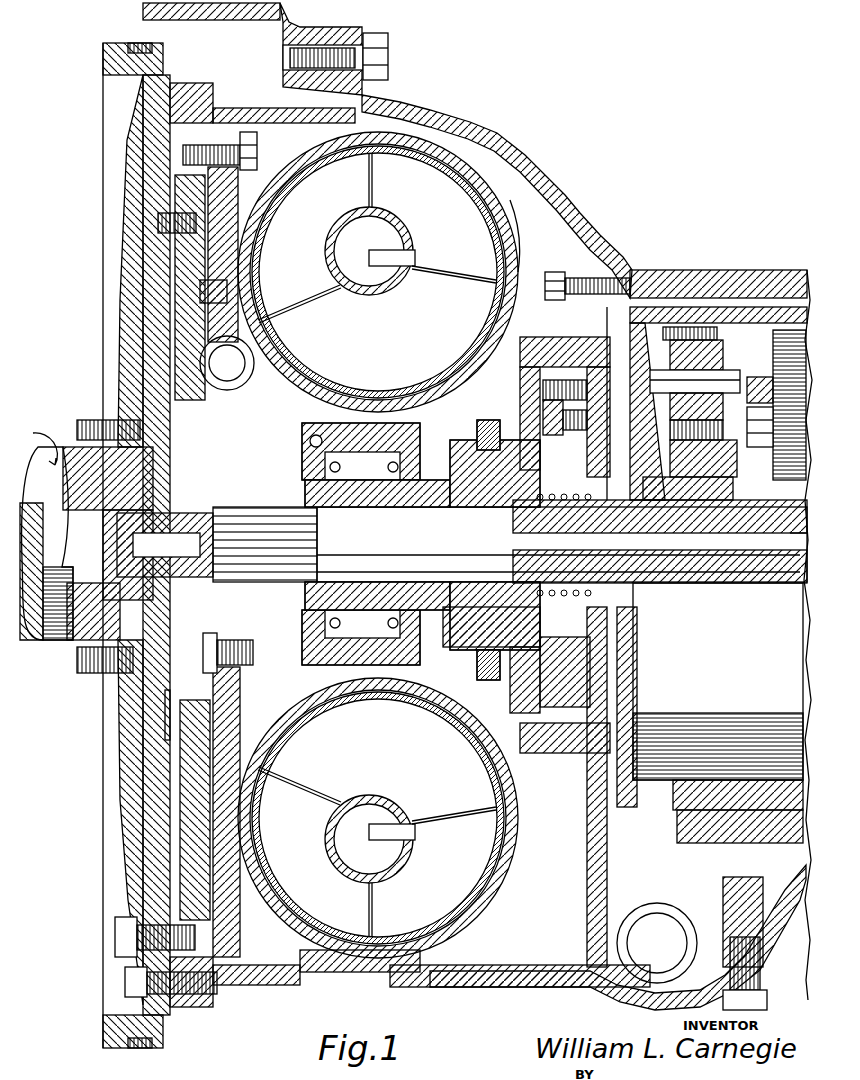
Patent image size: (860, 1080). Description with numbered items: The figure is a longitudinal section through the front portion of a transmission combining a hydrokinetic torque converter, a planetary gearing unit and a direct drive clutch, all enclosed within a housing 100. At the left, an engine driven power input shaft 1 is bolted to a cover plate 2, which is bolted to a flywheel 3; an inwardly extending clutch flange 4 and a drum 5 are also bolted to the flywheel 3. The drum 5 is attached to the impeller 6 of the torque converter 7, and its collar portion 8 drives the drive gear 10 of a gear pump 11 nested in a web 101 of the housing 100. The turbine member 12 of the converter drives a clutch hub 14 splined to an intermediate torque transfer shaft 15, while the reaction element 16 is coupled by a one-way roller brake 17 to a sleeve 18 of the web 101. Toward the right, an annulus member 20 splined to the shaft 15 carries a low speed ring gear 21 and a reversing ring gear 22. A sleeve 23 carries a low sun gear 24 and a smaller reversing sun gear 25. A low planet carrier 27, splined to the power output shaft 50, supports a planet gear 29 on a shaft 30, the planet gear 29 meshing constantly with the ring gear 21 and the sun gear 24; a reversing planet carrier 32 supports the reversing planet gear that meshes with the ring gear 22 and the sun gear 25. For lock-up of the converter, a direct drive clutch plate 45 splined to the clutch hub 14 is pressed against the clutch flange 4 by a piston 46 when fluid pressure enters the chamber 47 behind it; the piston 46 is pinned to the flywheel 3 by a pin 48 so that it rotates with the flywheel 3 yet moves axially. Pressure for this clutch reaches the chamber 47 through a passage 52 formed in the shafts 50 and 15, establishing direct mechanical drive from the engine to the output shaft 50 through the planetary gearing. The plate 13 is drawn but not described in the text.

The power input shaft 1 is at (43, 647).
The cover plate 2 is at (125, 340).
The flywheel 3 is at (150, 103).
The clutch flange 4 is at (228, 178).
The drum 5 is at (250, 108).
The impeller 6 is at (505, 240).
The torque converter 7 is at (509, 218).
The collar portion 8 is at (462, 455).
The drive gear 10 is at (540, 415).
The gear pump 11 is at (537, 388).
The turbine member 12 is at (303, 150).
The lower plate 13 is at (247, 707).
The clutch hub 14 is at (227, 452).
The intermediate torque transfer shaft 15 is at (120, 518).
The reaction element 16 is at (297, 395).
The one-way roller brake 17 is at (333, 662).
The sleeve 18 is at (380, 490).
The annulus member 20 is at (627, 373).
The low speed ring gear 21 is at (680, 327).
The reversing ring gear 22 is at (777, 305).
The sleeve 23 is at (740, 530).
The low sun gear 24 is at (723, 423).
The reversing sun gear 25 is at (660, 546).
The low planet carrier 27 is at (657, 398).
The planet gear 29 is at (715, 352).
The shaft 30 is at (733, 380).
The reversing planet carrier 32 is at (791, 521).
The direct drive clutch plate 45 is at (213, 897).
The piston 46 is at (183, 767).
The chamber 47 is at (173, 715).
The pin 48 is at (158, 222).
The power output shaft 50 is at (707, 573).
The passage 52 is at (140, 545).
The housing 100 is at (557, 205).
The web 101 is at (593, 360).